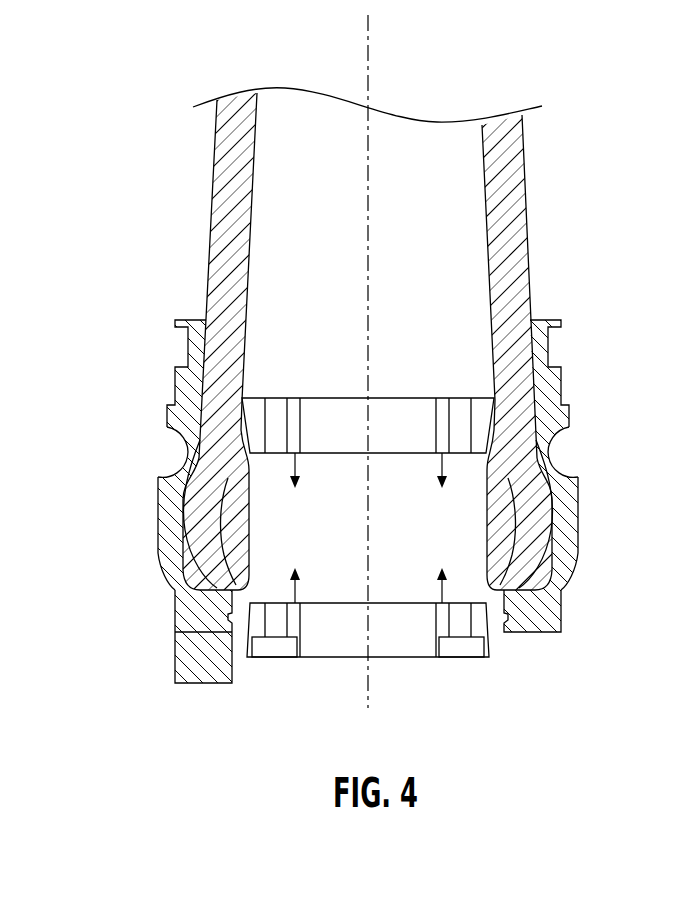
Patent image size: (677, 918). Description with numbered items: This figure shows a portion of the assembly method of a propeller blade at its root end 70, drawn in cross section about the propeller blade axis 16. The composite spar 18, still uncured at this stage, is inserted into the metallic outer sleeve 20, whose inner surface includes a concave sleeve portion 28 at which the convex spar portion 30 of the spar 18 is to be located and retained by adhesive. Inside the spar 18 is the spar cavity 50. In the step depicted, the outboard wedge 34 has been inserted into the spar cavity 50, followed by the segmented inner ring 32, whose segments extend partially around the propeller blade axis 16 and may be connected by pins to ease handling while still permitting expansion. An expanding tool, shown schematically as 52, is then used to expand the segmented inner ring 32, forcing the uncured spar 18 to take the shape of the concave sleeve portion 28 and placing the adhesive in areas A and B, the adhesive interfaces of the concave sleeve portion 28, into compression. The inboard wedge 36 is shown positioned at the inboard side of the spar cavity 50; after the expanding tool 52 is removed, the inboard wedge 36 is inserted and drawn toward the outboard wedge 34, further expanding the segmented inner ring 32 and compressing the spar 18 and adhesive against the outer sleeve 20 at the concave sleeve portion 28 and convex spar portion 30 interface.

The propeller blade axis 16 is at (368, 63).
The spar 18 is at (363, 344).
The outer sleeve 20 is at (379, 501).
The concave sleeve portion 28 is at (183, 530).
The convex spar portion 30 is at (182, 535).
The segmented inner ring 32 is at (252, 562).
The outboard wedge 34 is at (390, 398).
The inboard wedge 36 is at (400, 657).
The spar cavity 50 is at (323, 282).
The expanding tool 52 is at (258, 524).
The root end 70 is at (379, 474).
The adhesive interface area A is at (182, 477).
The adhesive interface area B is at (187, 578).